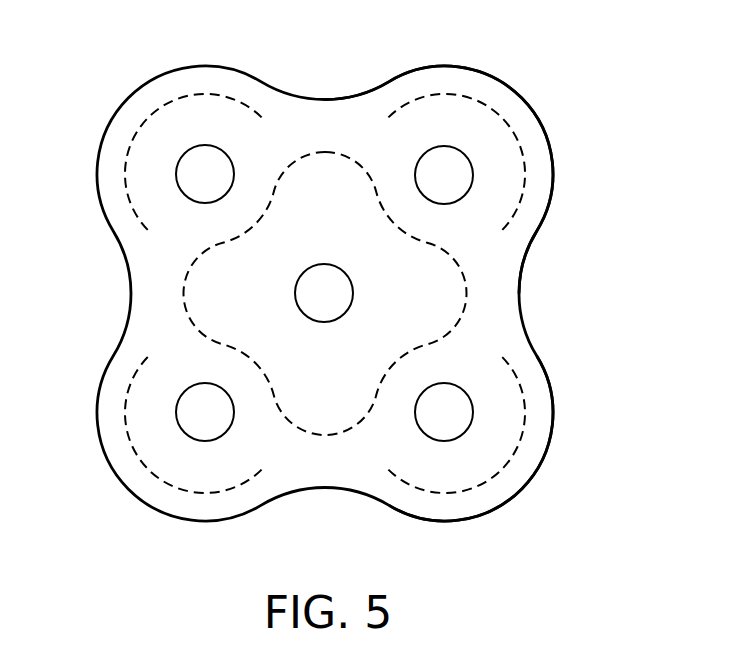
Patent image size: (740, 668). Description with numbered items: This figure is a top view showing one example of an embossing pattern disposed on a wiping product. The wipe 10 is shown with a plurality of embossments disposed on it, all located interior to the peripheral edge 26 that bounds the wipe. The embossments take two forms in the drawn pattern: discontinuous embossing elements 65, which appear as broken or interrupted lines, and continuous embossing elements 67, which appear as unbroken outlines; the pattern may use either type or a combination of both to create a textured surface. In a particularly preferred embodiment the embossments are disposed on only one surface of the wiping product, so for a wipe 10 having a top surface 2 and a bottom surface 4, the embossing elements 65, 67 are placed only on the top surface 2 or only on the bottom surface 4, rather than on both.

The top surface 2 is at (334, 134).
The bottom surface 4 is at (238, 62).
The wipe 10 is at (588, 78).
The peripheral edge 26 is at (542, 480).
The discontinuous embossing elements 65 is at (120, 433).
The continuous embossing elements 67 is at (473, 183).